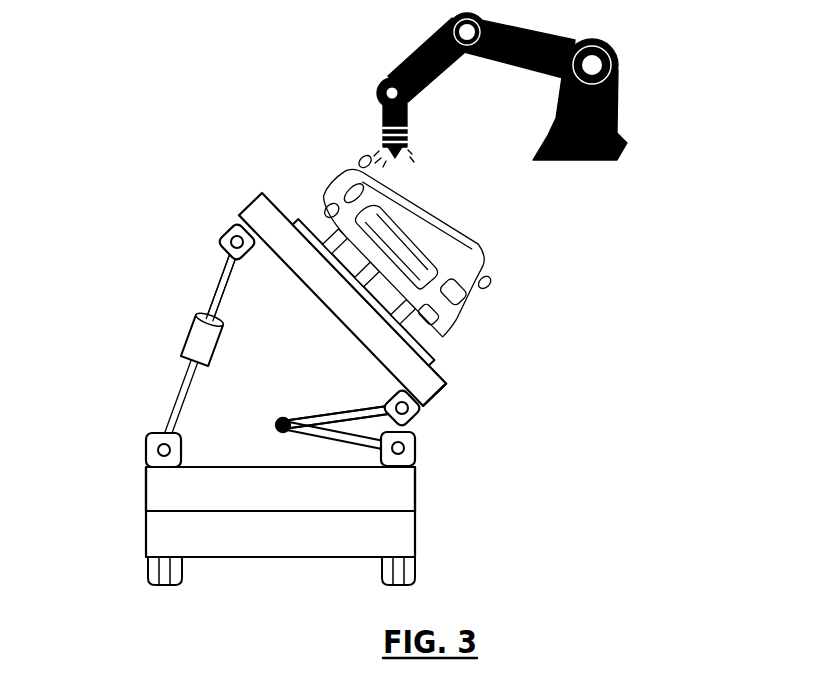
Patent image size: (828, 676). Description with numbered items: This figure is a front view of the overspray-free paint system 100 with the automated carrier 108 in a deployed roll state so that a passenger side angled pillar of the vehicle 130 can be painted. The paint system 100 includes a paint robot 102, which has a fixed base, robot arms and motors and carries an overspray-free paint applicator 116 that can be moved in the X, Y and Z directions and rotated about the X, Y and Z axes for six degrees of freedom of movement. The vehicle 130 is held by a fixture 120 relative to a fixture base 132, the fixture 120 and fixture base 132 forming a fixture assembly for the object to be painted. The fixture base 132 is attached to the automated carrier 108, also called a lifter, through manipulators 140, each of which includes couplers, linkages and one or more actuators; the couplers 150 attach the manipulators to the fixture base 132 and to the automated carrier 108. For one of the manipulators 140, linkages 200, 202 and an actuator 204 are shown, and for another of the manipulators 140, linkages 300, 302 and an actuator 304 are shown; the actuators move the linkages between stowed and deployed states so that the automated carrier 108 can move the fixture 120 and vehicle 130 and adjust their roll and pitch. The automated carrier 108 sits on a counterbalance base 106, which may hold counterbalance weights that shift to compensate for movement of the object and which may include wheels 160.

The overspray-free paint system 100 is at (147, 83).
The paint robot 102 is at (618, 92).
The counterbalance base 106 is at (146, 533).
The automated carrier 108 is at (146, 487).
The overspray-free paint applicator 116 is at (400, 158).
The fixture 120 is at (440, 357).
The vehicle 130 is at (480, 295).
The fixture base 132 is at (448, 387).
The manipulators 140 is at (233, 339).
The couplers 150 is at (220, 237).
The wheels 160 is at (147, 570).
The linkage 200 is at (175, 397).
The linkage 202 is at (217, 293).
The actuator 204 is at (183, 338).
The linkage 300 is at (307, 437).
The linkage 302 is at (343, 408).
The actuator 304 is at (280, 421).